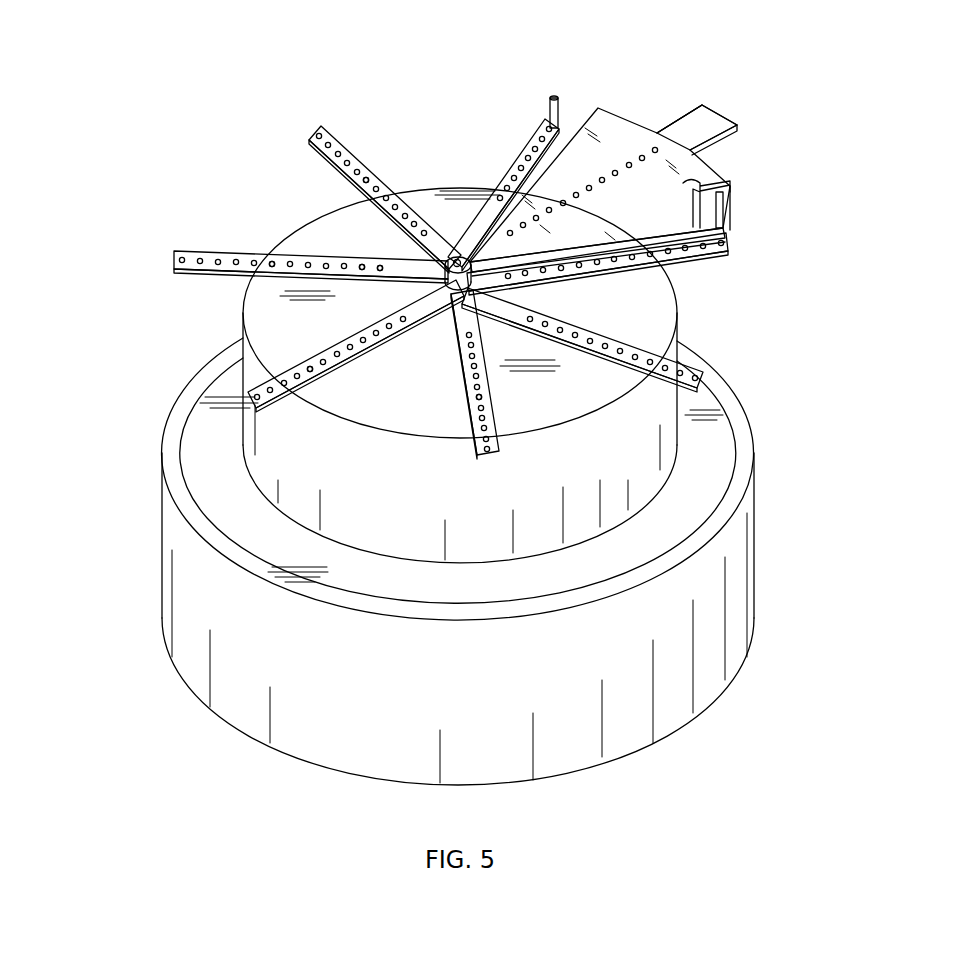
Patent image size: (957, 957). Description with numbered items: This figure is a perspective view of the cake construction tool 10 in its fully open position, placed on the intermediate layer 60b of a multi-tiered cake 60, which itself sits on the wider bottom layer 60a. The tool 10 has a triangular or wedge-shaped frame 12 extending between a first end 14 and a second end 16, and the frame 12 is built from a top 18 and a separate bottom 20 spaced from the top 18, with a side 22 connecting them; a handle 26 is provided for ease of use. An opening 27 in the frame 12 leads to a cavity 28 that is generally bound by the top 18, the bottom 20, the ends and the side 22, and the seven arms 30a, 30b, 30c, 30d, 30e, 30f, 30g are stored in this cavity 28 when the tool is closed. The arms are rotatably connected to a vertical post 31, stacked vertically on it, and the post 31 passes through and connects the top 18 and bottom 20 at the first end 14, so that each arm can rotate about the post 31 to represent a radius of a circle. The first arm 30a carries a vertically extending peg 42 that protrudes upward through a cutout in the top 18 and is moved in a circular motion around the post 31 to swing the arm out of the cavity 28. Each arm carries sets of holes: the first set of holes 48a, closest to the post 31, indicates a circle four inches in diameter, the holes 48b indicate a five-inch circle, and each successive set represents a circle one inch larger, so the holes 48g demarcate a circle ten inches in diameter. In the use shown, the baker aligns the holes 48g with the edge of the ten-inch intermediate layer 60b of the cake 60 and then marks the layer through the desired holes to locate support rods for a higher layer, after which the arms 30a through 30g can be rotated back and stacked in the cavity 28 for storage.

The cake construction tool 10 is at (638, 156).
The frame 12 is at (638, 166).
The first end 14 is at (454, 256).
The second end 16 is at (638, 162).
The top 18 is at (647, 133).
The bottom 20 is at (726, 233).
The side 22 is at (732, 200).
The handle 26 is at (738, 127).
The opening 27 is at (724, 215).
The cavity 28 is at (697, 258).
The first arm 30a is at (537, 143).
The arm 30b is at (340, 148).
The arm 30c is at (212, 252).
The arm 30d is at (348, 350).
The arm 30e is at (496, 397).
The arm 30f is at (610, 340).
The arm 30g is at (608, 279).
The vertical post 31 is at (456, 258).
The peg 42 is at (556, 98).
The first set of holes 48a is at (383, 271).
The holes 48b is at (363, 280).
The holes 48g is at (368, 178).
The base 60 is at (534, 486).
The bottom layer 60a is at (750, 547).
The intermediate layer 60b is at (665, 460).